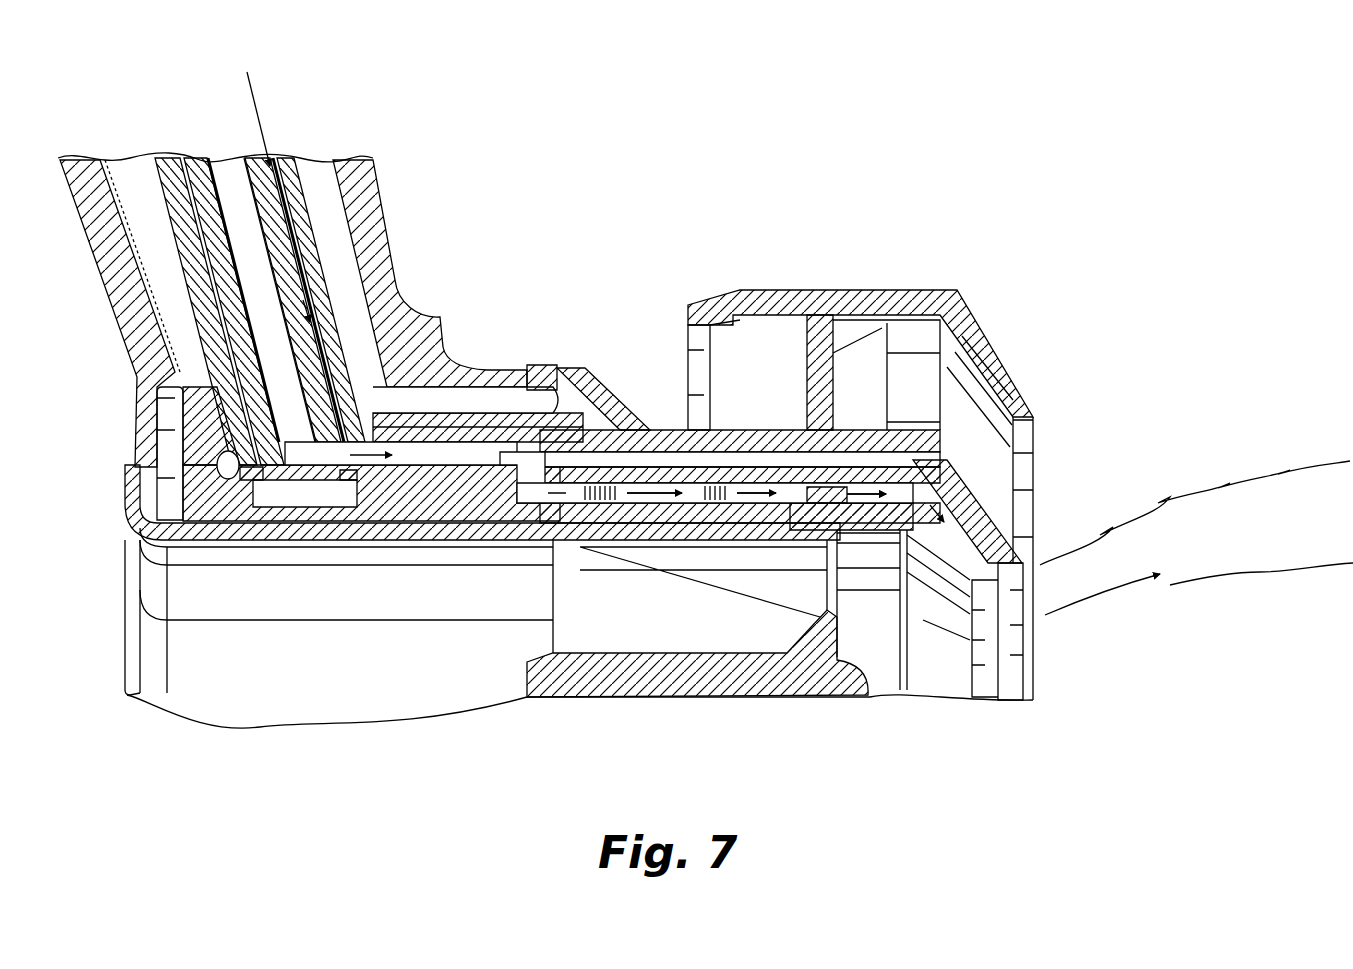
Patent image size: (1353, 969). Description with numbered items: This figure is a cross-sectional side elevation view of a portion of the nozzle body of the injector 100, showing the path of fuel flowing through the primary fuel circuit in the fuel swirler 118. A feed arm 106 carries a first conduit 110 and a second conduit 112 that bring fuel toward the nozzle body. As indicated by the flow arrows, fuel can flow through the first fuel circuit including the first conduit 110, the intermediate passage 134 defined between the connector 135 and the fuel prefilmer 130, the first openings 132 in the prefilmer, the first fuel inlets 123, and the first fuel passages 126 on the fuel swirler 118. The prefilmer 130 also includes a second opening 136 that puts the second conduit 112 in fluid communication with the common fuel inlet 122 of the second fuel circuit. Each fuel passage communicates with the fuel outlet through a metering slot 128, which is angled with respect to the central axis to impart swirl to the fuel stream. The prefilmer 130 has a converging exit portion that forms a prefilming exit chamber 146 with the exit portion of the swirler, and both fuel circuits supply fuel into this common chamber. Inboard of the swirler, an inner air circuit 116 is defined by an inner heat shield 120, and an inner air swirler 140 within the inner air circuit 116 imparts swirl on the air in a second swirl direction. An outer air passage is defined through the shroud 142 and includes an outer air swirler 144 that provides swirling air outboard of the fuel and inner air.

The injector 100 is at (1050, 182).
The feed arm 106 is at (362, 175).
The first conduit 110 is at (300, 157).
The second conduit 112 is at (222, 158).
The inner air circuit 116 is at (177, 583).
The fuel swirler 118 is at (985, 687).
The inner heat shield 120 is at (122, 667).
The common fuel inlet 122 is at (287, 493).
The first fuel inlet 123 is at (513, 470).
The first fuel passages 126 is at (612, 505).
The metering slot 128 is at (793, 500).
The fuel prefilmer 130 is at (1040, 567).
The first openings 132 is at (523, 473).
The intermediate passage 134 is at (423, 460).
The connector 135 is at (560, 445).
The second opening 136 is at (252, 475).
The inner air swirler 140 is at (702, 677).
The shroud 142 is at (978, 328).
The outer air swirler 144 is at (735, 355).
The prefilming exit chamber 146 is at (985, 540).